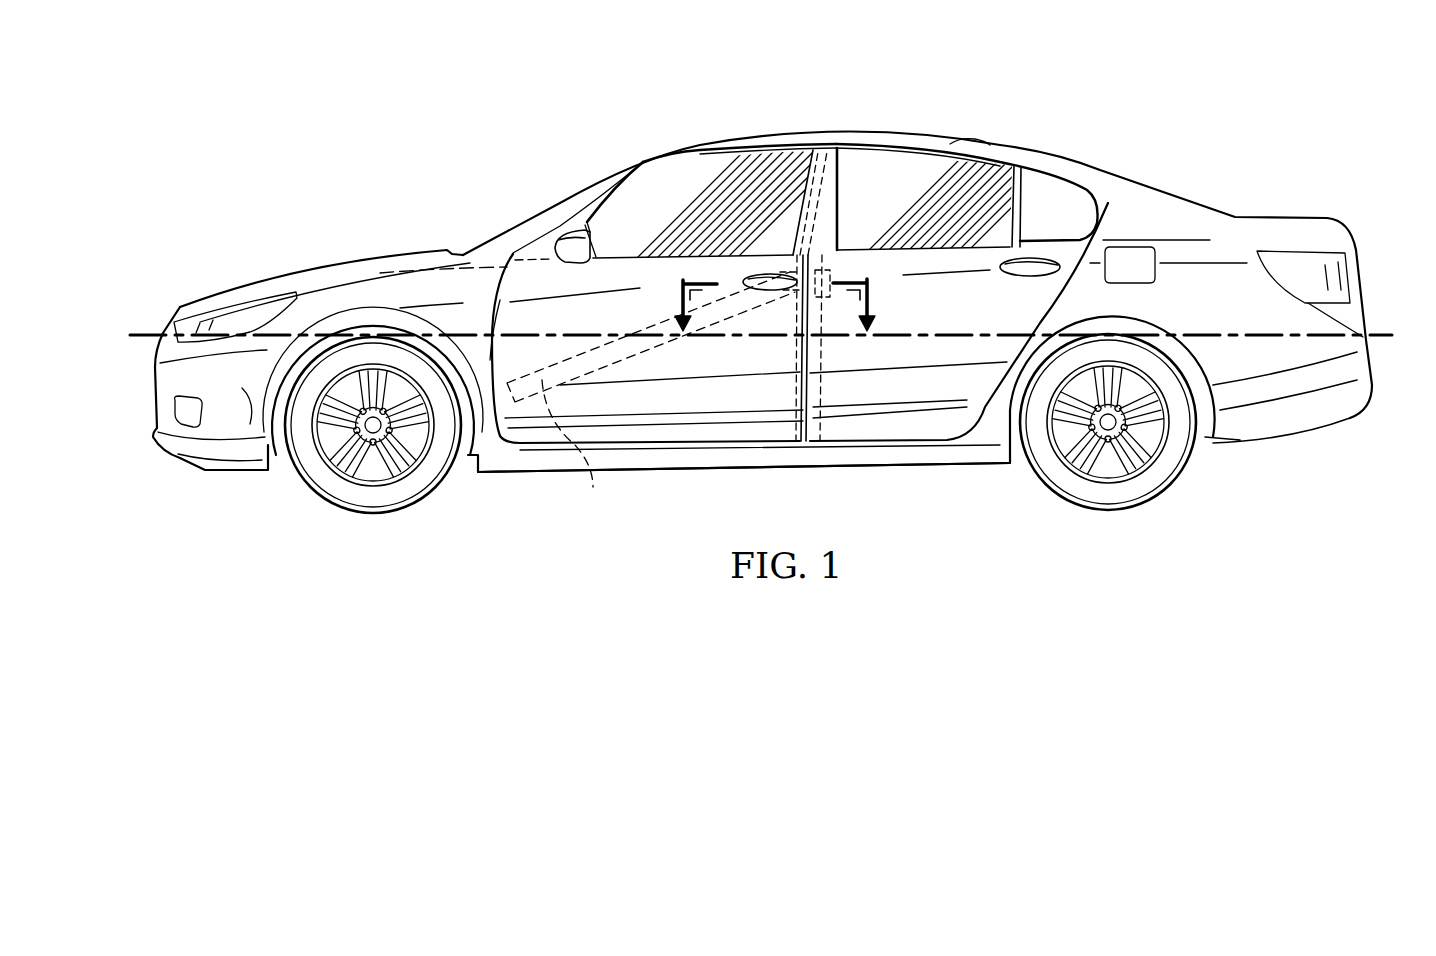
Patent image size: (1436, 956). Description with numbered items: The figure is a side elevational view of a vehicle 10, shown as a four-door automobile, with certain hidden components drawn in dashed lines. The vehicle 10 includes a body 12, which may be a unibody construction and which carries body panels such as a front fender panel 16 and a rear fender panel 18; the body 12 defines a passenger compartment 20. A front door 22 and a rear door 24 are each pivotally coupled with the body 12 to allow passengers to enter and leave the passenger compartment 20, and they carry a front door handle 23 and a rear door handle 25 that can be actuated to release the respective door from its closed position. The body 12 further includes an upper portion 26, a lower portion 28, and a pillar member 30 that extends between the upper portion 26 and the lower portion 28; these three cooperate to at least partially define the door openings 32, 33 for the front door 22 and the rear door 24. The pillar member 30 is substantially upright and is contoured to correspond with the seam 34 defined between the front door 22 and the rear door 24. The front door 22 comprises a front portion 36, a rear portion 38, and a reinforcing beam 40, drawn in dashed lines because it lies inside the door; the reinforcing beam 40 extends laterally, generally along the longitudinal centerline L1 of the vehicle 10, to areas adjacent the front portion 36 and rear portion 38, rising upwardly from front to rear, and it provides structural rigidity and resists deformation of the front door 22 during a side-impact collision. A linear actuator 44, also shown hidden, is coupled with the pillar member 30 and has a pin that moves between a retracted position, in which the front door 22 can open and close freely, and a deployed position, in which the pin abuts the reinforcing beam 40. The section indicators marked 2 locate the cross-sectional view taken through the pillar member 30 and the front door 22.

The vehicle 10 is at (1036, 92).
The body 12 is at (492, 497).
The front fender panel 16 is at (355, 296).
The rear fender panel 18 is at (1215, 274).
The passenger compartment 20 is at (660, 193).
The front door 22 is at (652, 397).
The front door handle 23 is at (772, 274).
The rear door 24 is at (920, 390).
The rear door handle 25 is at (1037, 258).
The upper portion 26 is at (819, 116).
The lower portion 28 is at (714, 478).
The pillar member 30 is at (825, 160).
The door opening 32 is at (726, 150).
The door opening 33 is at (908, 155).
The seam 34 is at (818, 398).
The front portion 36 is at (508, 316).
The rear portion 38 is at (758, 324).
The reinforcing beam 40 is at (575, 448).
The linear actuator 44 is at (820, 275).
The section line 2- 2 is at (775, 304).
The longitudinal centerline L1 is at (776, 335).